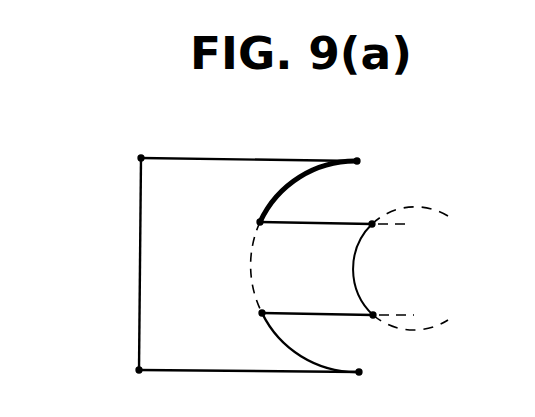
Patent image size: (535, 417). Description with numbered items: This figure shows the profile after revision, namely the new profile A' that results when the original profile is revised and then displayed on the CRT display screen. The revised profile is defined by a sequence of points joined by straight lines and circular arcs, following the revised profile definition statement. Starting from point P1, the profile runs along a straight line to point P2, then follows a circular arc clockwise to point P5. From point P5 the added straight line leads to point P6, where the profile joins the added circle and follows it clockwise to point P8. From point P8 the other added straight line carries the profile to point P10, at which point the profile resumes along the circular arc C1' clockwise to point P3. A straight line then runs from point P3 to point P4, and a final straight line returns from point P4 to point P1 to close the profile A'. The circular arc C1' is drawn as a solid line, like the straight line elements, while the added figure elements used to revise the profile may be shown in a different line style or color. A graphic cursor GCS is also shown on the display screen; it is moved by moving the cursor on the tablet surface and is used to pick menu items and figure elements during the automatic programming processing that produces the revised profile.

The revised profile A' is at (249, 230).
The circular arc C1' is at (297, 163).
The graphic cursor GCS is at (288, 187).
The point P1 is at (122, 370).
The point P2 is at (380, 374).
The point P3 is at (366, 148).
The point P4 is at (123, 156).
The point P5 is at (250, 312).
The point P6 is at (387, 300).
The point P8 is at (383, 242).
The point P10 is at (256, 221).